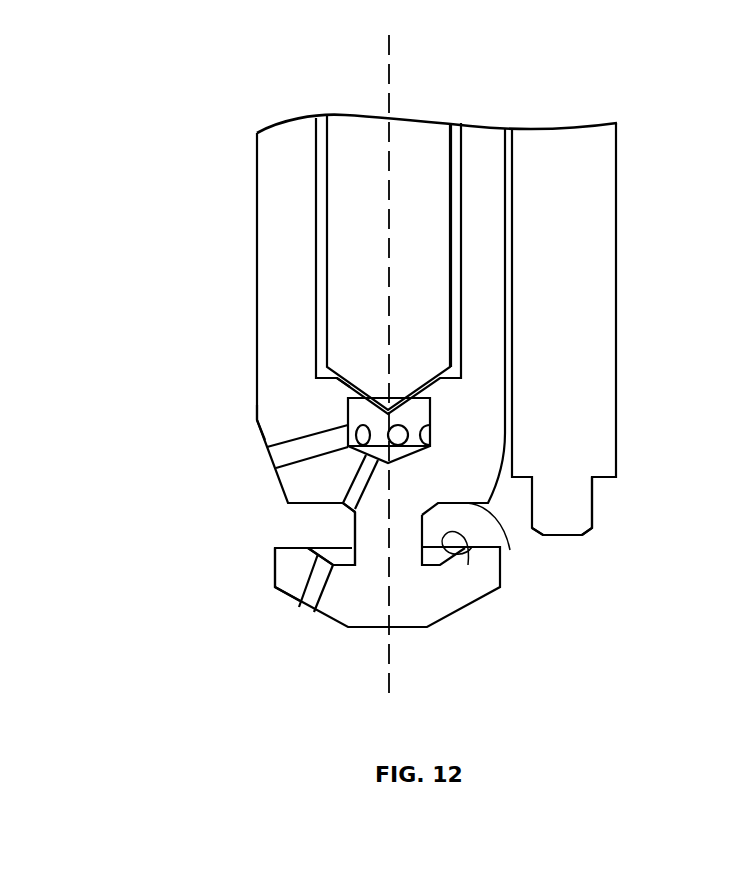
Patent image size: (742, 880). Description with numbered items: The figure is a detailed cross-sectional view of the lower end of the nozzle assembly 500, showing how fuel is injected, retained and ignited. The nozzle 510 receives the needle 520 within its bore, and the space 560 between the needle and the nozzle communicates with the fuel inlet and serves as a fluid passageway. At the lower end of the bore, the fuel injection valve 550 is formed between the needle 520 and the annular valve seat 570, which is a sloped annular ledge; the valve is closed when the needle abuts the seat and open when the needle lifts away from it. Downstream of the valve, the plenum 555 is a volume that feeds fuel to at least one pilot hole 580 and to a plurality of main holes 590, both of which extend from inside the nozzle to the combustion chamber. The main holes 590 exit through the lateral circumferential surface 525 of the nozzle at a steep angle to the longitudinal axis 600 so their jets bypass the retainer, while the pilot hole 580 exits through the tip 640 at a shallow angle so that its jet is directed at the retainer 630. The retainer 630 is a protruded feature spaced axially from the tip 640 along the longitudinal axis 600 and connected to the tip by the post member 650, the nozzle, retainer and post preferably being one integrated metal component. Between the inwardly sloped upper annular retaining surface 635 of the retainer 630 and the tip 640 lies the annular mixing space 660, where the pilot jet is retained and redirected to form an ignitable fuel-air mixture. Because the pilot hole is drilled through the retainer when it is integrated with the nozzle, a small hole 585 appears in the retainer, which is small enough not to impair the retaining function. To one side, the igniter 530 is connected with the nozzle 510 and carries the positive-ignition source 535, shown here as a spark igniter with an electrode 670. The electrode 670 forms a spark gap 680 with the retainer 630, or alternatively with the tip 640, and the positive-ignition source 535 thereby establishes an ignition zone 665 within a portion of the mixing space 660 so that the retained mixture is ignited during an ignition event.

The nozzle assembly 500 is at (186, 138).
The nozzle 510 is at (257, 217).
The needle 520 is at (350, 133).
The lateral circumferential surface 525 is at (257, 421).
The igniter 530 is at (620, 368).
The positive-ignition source 535 is at (580, 537).
The fuel injection valve 550 is at (476, 365).
The plenum 555 is at (413, 417).
The space 560 is at (458, 208).
The annular valve seat 570 is at (327, 393).
The pilot hole 580 is at (355, 478).
The hole 585 is at (308, 597).
The main hole 590 is at (307, 447).
The longitudinal axis 600 is at (385, 653).
The retainer 630 is at (273, 575).
The annular retaining surface 635 is at (468, 565).
The tip 640 is at (510, 550).
The post member 650 is at (370, 533).
The annular mixing space 660 is at (318, 518).
The ignition zone 665 is at (522, 552).
The electrode 670 is at (583, 526).
The spark gap 680 is at (530, 540).